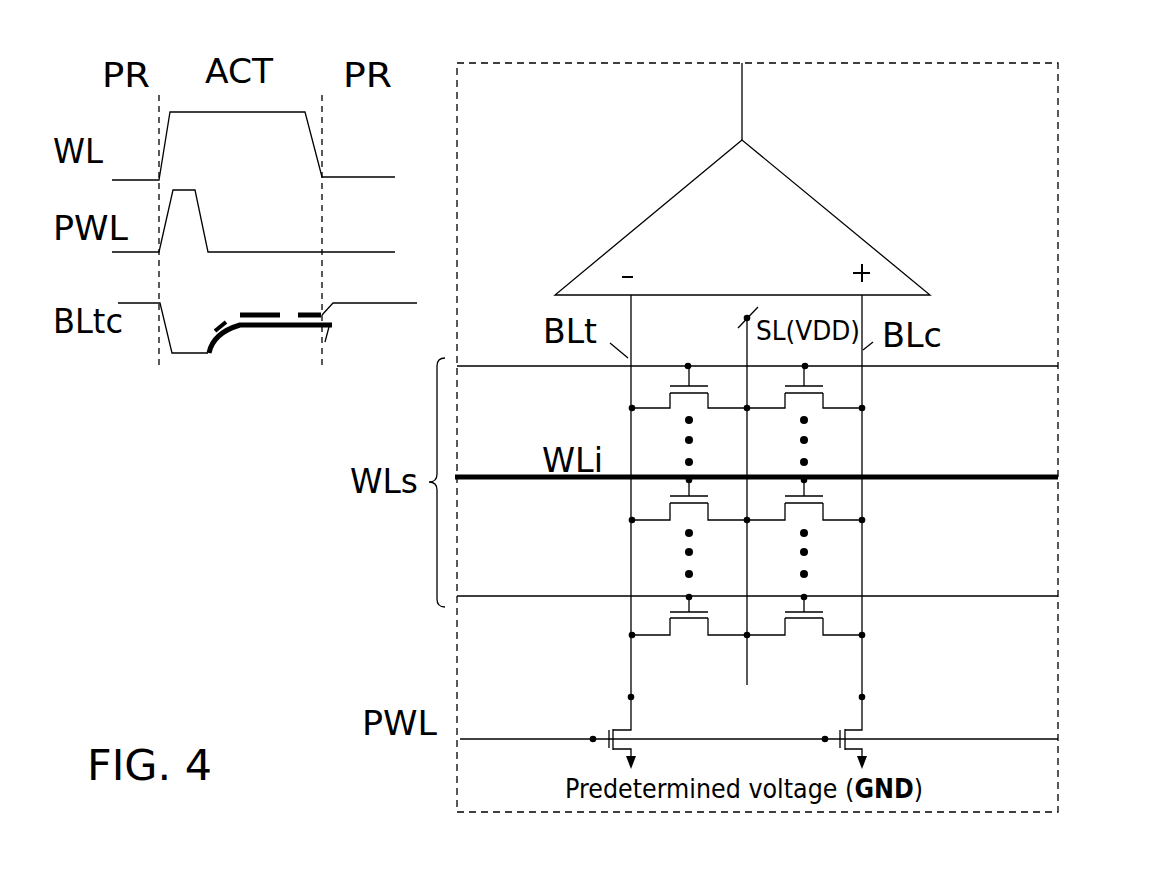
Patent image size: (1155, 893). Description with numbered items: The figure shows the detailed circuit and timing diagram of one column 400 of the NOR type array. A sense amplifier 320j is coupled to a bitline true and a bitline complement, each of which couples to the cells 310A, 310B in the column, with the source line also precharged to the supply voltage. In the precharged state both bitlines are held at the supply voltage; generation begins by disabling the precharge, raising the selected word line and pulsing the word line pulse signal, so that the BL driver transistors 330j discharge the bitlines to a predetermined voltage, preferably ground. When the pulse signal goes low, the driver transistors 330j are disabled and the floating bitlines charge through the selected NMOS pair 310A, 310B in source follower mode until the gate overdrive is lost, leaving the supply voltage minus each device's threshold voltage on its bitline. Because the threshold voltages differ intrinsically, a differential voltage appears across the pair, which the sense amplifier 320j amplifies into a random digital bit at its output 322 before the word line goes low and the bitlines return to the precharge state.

The column 400 is at (1075, 125).
The output 322 is at (743, 107).
The sense amplifier 320j is at (742, 217).
The NMOS cell 310A is at (668, 523).
The NMOS cell 310B is at (817, 515).
The BL driver transistors 330j is at (855, 723).